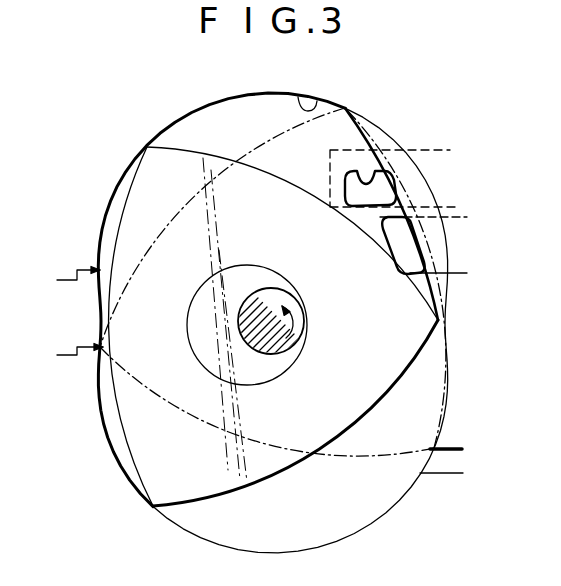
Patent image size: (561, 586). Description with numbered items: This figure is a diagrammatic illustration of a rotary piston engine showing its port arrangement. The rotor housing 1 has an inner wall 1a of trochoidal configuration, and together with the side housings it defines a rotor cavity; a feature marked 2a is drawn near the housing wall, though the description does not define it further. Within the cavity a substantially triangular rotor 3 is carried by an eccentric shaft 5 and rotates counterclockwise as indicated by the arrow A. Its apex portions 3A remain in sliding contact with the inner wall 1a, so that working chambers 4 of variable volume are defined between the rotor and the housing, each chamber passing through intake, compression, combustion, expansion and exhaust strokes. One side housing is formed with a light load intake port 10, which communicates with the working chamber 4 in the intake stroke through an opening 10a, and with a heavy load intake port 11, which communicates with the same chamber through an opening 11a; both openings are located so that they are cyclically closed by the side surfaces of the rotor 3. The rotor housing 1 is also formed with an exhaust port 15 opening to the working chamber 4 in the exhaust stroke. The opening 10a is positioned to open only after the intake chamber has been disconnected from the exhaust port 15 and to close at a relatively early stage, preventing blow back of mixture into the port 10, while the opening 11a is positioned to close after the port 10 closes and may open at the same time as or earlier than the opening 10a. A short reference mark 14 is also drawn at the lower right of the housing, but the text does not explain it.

The rotor housing 1 is at (265, 91).
The inner wall 1a is at (312, 98).
The side housing inner surface 2a is at (210, 117).
The rotor 3 is at (125, 202).
The apex portions 3A is at (156, 160).
The working chambers 4 is at (115, 227).
The eccentric shaft 5 is at (264, 348).
The arrow A is at (298, 314).
The light load intake port 10 is at (430, 258).
The opening 10a is at (410, 243).
The heavy load intake port 11 is at (402, 182).
The opening 11a is at (376, 172).
The minor axis reference line 14 is at (443, 473).
The exhaust port 15 is at (68, 277).